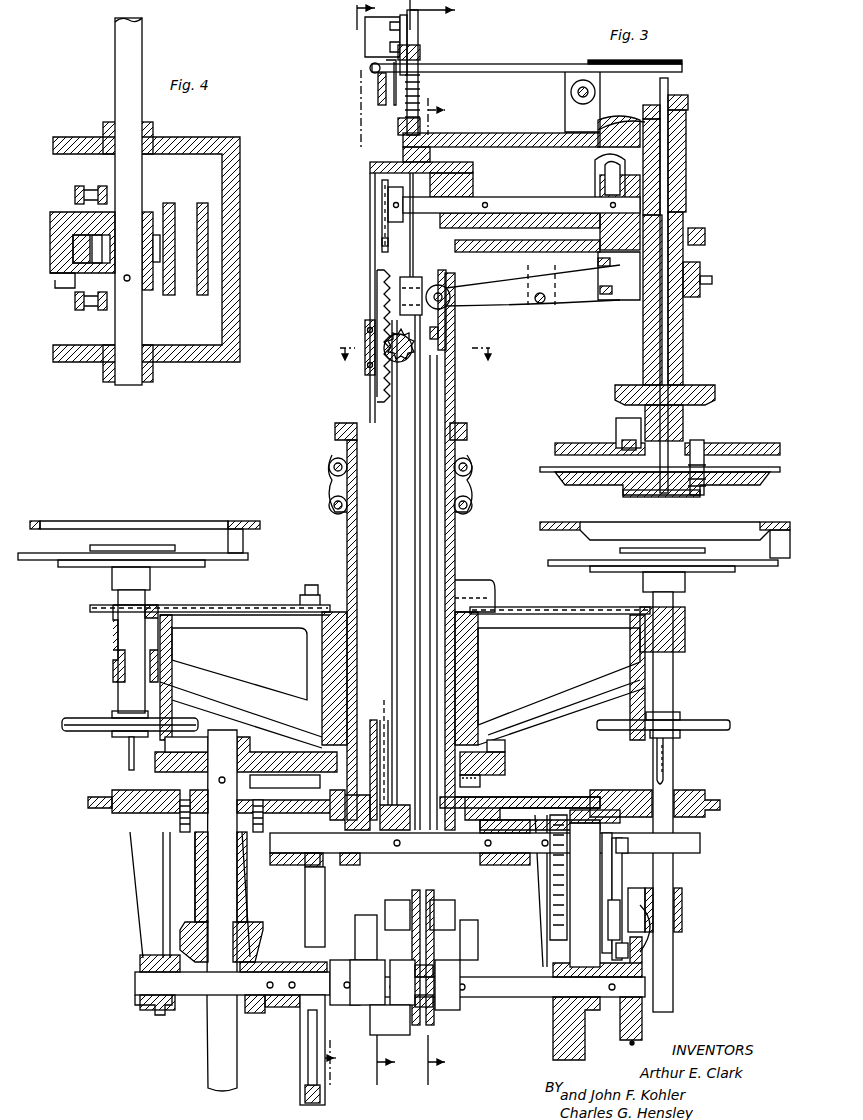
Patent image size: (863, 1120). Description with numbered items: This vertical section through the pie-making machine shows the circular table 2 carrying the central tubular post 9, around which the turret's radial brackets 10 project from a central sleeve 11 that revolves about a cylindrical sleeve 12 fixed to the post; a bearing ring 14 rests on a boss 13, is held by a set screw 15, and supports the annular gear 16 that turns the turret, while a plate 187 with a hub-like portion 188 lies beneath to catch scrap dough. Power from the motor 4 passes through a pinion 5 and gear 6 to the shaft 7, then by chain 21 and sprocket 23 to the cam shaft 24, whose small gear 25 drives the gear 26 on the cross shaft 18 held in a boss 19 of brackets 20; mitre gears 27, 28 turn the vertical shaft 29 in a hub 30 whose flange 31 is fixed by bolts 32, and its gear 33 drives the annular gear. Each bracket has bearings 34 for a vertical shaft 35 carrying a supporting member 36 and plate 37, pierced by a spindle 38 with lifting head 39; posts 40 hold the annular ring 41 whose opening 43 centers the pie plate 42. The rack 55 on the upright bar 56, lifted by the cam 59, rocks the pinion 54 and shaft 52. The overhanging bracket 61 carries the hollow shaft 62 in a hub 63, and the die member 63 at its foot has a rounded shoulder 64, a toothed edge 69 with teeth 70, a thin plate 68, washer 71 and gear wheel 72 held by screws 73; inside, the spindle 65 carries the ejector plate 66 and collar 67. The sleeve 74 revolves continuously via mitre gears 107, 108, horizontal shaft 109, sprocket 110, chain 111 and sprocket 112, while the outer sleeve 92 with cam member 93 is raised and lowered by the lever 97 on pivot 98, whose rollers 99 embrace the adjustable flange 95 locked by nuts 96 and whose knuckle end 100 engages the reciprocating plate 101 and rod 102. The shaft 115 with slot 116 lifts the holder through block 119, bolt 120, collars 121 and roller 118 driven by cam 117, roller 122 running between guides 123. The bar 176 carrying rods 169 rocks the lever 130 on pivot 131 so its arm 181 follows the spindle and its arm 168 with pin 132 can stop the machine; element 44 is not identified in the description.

In FIG. 3, the table 2 is at (696, 806).
In FIG. 3, the motor 4 is at (414, 364).
In FIG. 3, the pinion 5 is at (423, 542).
In FIG. 3, the gear 6 is at (442, 591).
In FIG. 3, the shaft 7 is at (346, 545).
In FIG. 3, the tubular post 9 is at (456, 562).
In FIG. 3, the radial brackets 10 is at (560, 688).
In FIG. 3, the central sleeve 11 is at (390, 700).
In FIG. 3, the cylindrical sleeve 12 is at (470, 600).
In FIG. 3, the boss 13 is at (468, 800).
In FIG. 3, the bearing ring 14 is at (490, 760).
In FIG. 3, the set screw 15 is at (485, 782).
In FIG. 3, the annular gear 16 is at (500, 745).
In FIG. 3, the cross shaft 18 is at (205, 992).
In FIG. 3, the boss 19 is at (143, 1003).
In FIG. 3, the brackets 20 is at (146, 932).
In FIG. 3, the endless chain 21 is at (552, 893).
In FIG. 3, the sprocket 23 is at (548, 855).
In FIG. 3, the cam shaft 24 is at (485, 842).
In FIG. 3, the small gear 25 is at (305, 862).
In FIG. 3, the gear 26 is at (302, 1070).
In FIG. 3, the mitre gear 27 is at (258, 1013).
In FIG. 3, the mitre gear 28 is at (255, 950).
In FIG. 3, the vertical shaft 29 is at (220, 880).
In FIG. 3, the hub 30 is at (195, 862).
In FIG. 3, the flange 31 is at (178, 828).
In FIG. 3, the bolts 32 is at (168, 790).
In FIG. 3, the gear 33 is at (180, 755).
In FIG. 3, the bearings 34 is at (112, 632).
In FIG. 3, the vertical shaft 35 is at (672, 602).
In FIG. 3, the supporting member 36 is at (734, 567).
In FIG. 3, the plate 37 is at (768, 566).
In FIG. 3, the spindle 38 is at (126, 758).
In FIG. 3, the head 39 is at (626, 550).
In FIG. 3, the short posts 40 is at (788, 545).
In FIG. 3, the annular ring 41 is at (242, 521).
In FIG. 3, the pie plate 42 is at (592, 526).
In FIG. 3, the opening 43 is at (542, 527).
In FIG. 3, the wheel 44 is at (68, 732).
In FIG. 4, the shaft 52 is at (125, 385).
In FIG. 4, the pinion 54 is at (158, 235).
In FIG. 3, the pinion 54 is at (402, 365).
In FIG. 4, the rack 55 is at (50, 252).
In FIG. 3, the rack 55 is at (377, 393).
In FIG. 3, the upright bar 56 is at (413, 572).
In FIG. 3, the cam 59 is at (370, 1020).
In FIG. 3, the overhanging bracket 61 is at (506, 133).
In FIG. 3, the hollow shaft 62 is at (678, 165).
In FIG. 3, the die member 63 is at (622, 120).
In FIG. 3, the rounded shoulder 64 is at (736, 493).
In FIG. 3, the spindle 65 is at (672, 84).
In FIG. 3, the ejector plate 66 is at (634, 497).
In FIG. 3, the collar 67 is at (688, 100).
In FIG. 3, the thin plate 68 is at (545, 468).
In FIG. 3, the outer flange 69 is at (568, 483).
In FIG. 3, the teeth 70 is at (555, 476).
In FIG. 3, the washer 71 is at (732, 452).
In FIG. 3, the gear wheel 72 is at (583, 443).
In FIG. 3, the screws 73 is at (700, 460).
In FIG. 3, the sleeve 74 is at (676, 322).
In FIG. 3, the outer sleeve 92 is at (645, 350).
In FIG. 3, the cam member 93 is at (615, 392).
In FIG. 3, the flange 95 is at (712, 280).
In FIG. 3, the lock nuts 96 is at (692, 270).
In FIG. 3, the lever 97 is at (530, 300).
In FIG. 3, the pivot 98 is at (542, 304).
In FIG. 3, the rollers 99 is at (622, 300).
In FIG. 3, the knuckle end 100 is at (452, 297).
In FIG. 3, the reciprocating plate 101 is at (447, 338).
In FIG. 4, the vertical rod 102 is at (202, 296).
In FIG. 3, the vertical rod 102 is at (455, 406).
In FIG. 3, the mitre gear 107 is at (705, 235).
In FIG. 3, the mitre gear 108 is at (618, 178).
In FIG. 3, the horizontal shaft 109 is at (530, 200).
In FIG. 3, the sprocket wheel 110 is at (380, 211).
In FIG. 4, the chain 111 is at (73, 191).
In FIG. 3, the chain 111 is at (380, 242).
In FIG. 3, the sprocket wheel 112 is at (388, 810).
In FIG. 3, the shaft 115 is at (676, 982).
In FIG. 3, the lateral slot 116 is at (670, 770).
In FIG. 3, the cam 117 is at (640, 1048).
In FIG. 3, the antifriction roller 118 is at (650, 950).
In FIG. 3, the block 119 is at (684, 908).
In FIG. 3, the bolt 120 is at (648, 905).
In FIG. 3, the collars 121 is at (660, 930).
In FIG. 3, the roller 122 is at (622, 885).
In FIG. 3, the vertical guides 123 is at (622, 855).
In FIG. 3, the lever 130 is at (580, 66).
In FIG. 3, the pivot 131 is at (570, 92).
In FIG. 3, the pin 132 is at (372, 75).
In FIG. 3, the lever arm 168 is at (485, 64).
In FIG. 3, the vertical rods 169 is at (410, 35).
In FIG. 4, the bar 176 is at (168, 296).
In FIG. 3, the bar 176 is at (412, 504).
In FIG. 3, the arm 181 is at (635, 53).
In FIG. 3, the plate 187 is at (255, 600).
In FIG. 3, the hub-like portion 188 is at (318, 590).